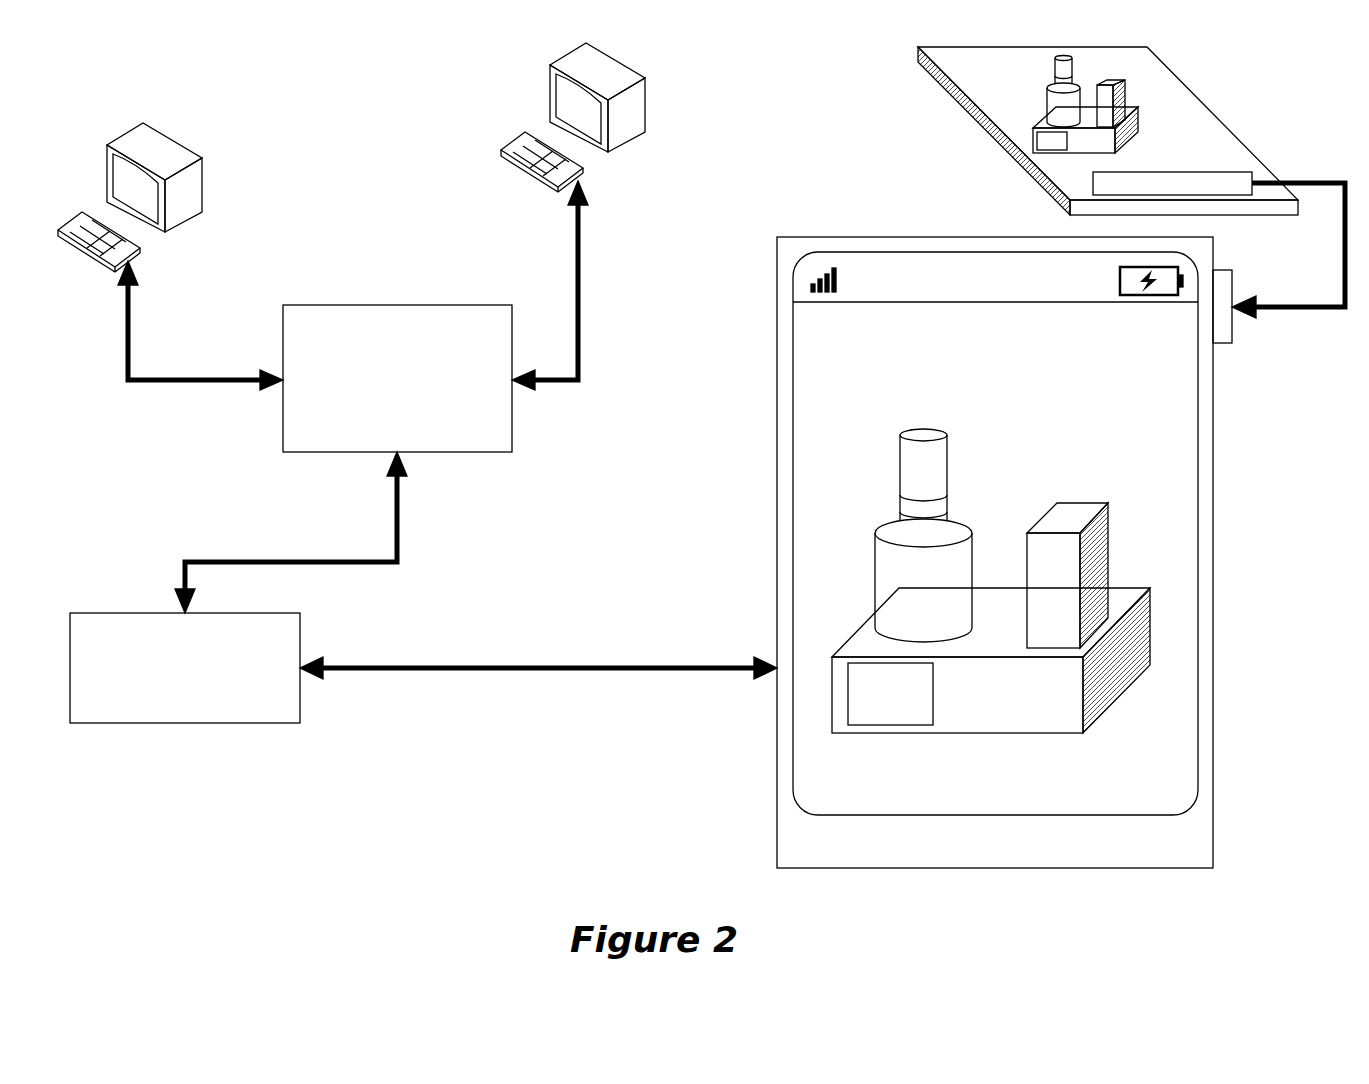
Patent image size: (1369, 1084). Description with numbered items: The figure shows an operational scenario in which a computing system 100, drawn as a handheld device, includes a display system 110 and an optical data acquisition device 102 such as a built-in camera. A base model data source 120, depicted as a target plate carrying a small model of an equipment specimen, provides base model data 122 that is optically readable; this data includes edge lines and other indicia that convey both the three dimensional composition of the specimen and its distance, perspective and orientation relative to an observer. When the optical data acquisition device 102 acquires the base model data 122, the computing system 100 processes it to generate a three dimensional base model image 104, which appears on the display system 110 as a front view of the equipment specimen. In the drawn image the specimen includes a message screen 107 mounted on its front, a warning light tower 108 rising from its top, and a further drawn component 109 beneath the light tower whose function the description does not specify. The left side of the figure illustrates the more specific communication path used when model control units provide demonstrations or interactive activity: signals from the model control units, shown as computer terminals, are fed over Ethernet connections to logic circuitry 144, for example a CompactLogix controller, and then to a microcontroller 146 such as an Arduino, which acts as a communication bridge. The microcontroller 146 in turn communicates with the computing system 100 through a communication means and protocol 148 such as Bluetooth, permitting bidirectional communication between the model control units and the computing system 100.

The computing system 100 is at (984, 552).
The optical data acquisition device 102 is at (1221, 344).
The base model image 104 is at (984, 627).
The message screen 107 is at (848, 693).
The warning light tower 108 is at (900, 465).
The lower cylindrical component of equipment specimen 109 is at (875, 578).
The display system 110 is at (984, 544).
The base model data source 120 is at (935, 85).
The base model data 122 is at (1173, 172).
The logic circuitry 144 is at (397, 378).
The microcontroller 146 is at (185, 668).
The communication means and/or protocol 148 is at (420, 673).